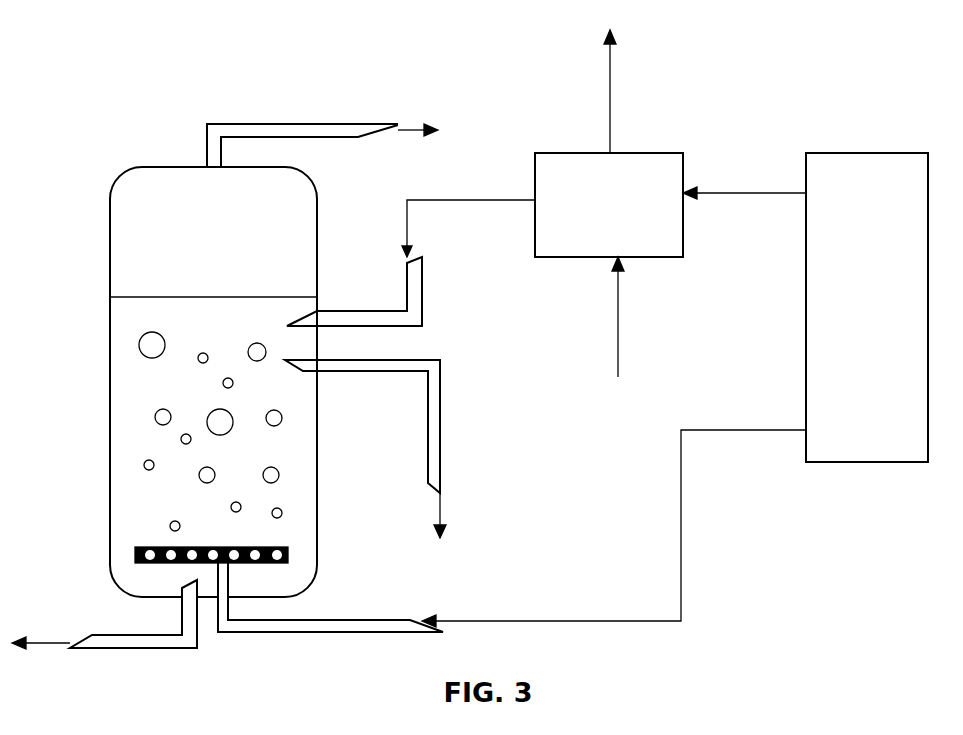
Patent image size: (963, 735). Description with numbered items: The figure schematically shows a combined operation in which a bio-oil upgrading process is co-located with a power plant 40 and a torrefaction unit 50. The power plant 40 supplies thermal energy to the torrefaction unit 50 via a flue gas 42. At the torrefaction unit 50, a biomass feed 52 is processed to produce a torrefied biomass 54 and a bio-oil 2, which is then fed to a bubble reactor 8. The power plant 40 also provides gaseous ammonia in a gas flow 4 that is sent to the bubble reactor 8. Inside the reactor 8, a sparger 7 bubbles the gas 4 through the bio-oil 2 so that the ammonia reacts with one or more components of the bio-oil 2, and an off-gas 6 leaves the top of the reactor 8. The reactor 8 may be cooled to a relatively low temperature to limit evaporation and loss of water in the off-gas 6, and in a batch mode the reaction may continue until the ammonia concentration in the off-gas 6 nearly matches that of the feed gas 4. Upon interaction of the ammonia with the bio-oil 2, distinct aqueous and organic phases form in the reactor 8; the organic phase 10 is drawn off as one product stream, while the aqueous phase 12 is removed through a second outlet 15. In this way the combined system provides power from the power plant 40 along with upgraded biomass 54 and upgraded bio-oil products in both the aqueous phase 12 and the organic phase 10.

The bio-oil 2 is at (135, 380).
The gas 4 is at (234, 380).
The off-gas 6 is at (415, 124).
The sparger 7 is at (300, 545).
The bubble reactor 8 is at (110, 483).
The organic phase 10 is at (48, 644).
The aqueous phase 12 is at (443, 510).
The second outlet 15 is at (443, 390).
The power plant 40 is at (843, 153).
The flue gas 42 is at (714, 193).
The torrefaction unit 50 is at (577, 153).
The biomass feed 52 is at (617, 345).
The torrefied biomass 54 is at (610, 102).